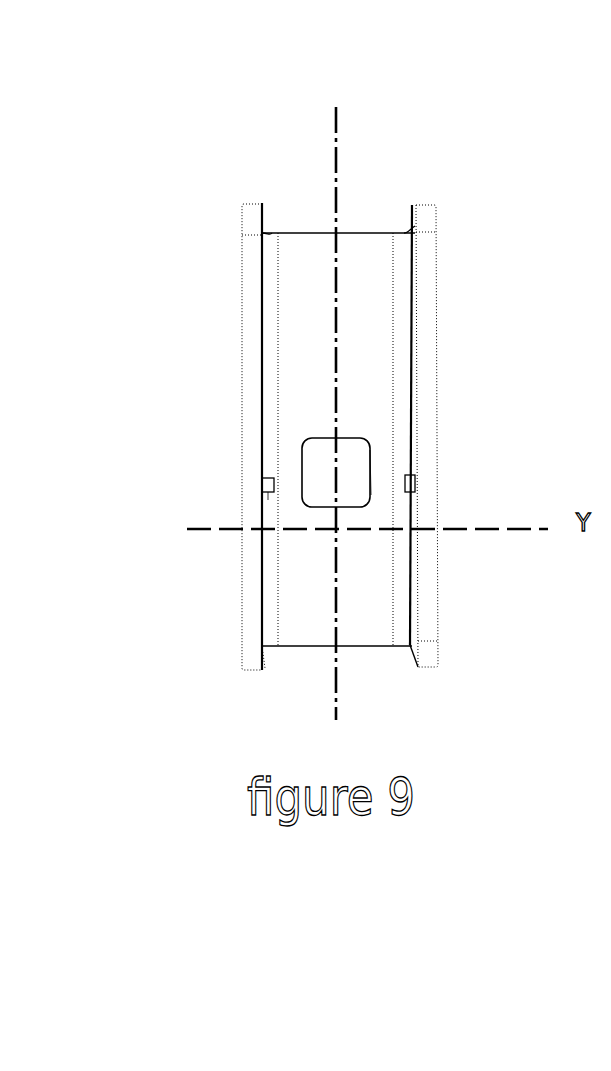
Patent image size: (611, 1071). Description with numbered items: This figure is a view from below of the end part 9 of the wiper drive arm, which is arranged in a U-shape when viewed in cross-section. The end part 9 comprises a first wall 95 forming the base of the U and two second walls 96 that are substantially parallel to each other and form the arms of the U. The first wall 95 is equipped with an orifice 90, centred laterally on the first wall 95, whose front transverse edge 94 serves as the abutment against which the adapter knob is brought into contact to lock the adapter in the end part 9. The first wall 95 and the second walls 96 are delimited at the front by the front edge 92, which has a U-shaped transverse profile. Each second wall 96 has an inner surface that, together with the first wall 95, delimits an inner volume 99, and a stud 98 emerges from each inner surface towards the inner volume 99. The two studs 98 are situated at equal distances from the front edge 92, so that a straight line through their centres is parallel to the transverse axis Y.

The end part 9 is at (312, 173).
The orifice 90 is at (370, 459).
The front edge 92 is at (343, 233).
The front transverse edge 94 is at (330, 438).
The first wall 95 is at (379, 352).
The second walls 96 is at (243, 439).
The stud 98 is at (271, 488).
The inner volume 99 is at (311, 597).